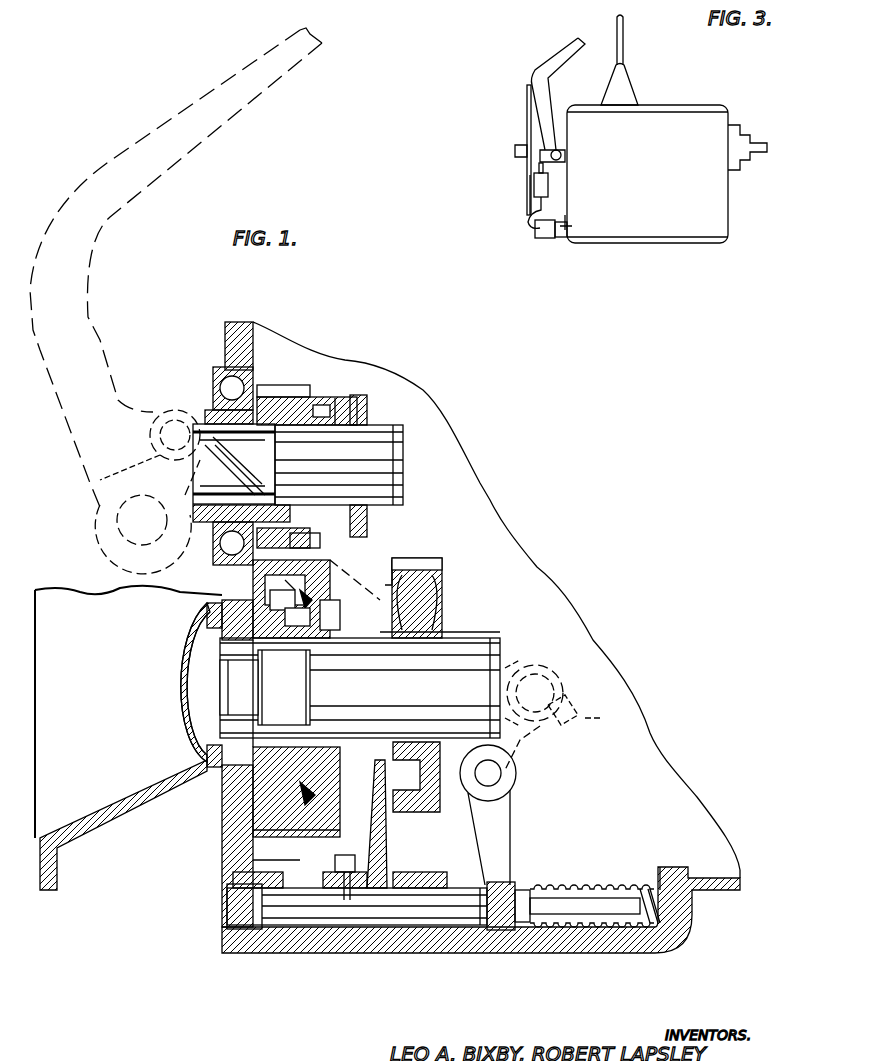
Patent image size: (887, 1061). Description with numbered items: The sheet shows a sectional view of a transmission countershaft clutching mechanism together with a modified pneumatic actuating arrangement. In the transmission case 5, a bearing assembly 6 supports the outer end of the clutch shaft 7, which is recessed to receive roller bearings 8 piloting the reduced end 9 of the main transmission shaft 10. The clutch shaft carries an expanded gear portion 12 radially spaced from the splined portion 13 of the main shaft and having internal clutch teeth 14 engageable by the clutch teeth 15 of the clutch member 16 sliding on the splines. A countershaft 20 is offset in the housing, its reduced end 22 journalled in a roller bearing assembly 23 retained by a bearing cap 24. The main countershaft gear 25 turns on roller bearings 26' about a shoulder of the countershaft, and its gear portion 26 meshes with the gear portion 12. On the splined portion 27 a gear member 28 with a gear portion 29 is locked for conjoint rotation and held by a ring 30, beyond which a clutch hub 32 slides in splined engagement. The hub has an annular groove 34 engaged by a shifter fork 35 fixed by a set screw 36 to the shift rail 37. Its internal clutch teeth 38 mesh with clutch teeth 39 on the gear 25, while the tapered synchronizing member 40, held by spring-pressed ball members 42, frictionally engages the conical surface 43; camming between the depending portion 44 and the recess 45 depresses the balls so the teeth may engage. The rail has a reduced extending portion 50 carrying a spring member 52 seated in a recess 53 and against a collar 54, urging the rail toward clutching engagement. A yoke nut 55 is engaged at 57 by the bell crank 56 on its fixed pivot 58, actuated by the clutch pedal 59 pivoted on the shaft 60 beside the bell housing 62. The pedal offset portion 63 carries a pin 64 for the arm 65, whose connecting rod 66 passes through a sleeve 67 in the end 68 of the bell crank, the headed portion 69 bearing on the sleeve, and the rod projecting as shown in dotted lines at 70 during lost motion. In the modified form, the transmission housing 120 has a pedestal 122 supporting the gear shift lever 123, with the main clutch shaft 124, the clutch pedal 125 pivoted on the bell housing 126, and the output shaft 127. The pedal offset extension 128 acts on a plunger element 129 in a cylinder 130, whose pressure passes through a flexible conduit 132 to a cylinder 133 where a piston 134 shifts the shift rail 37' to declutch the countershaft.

In FIG. 1, the transmission case 5 is at (228, 330).
In FIG. 1, the bearing assembly 6 is at (222, 382).
In FIG. 1, the clutch shaft 7 is at (222, 445).
In FIG. 1, the roller bearings 8 is at (265, 420).
In FIG. 1, the reduced end 9 is at (206, 500).
In FIG. 1, the main transmission shaft 10 is at (400, 455).
In FIG. 1, the gear portion 12 is at (290, 385).
In FIG. 1, the splined portion 13 is at (365, 437).
In FIG. 1, the internal clutch teeth 14 is at (318, 398).
In FIG. 1, the clutch teeth 15 is at (325, 405).
In FIG. 1, the clutch member 16 is at (345, 425).
In FIG. 1, the countershaft 20 is at (228, 795).
In FIG. 1, the reduced end 22 is at (225, 667).
In FIG. 1, the roller bearing assembly 23 is at (207, 630).
In FIG. 1, the bearing cap 24 is at (185, 732).
In FIG. 1, the main countershaft gear 25 is at (240, 815).
In FIG. 1, the gear portion 26 is at (257, 858).
In FIG. 1, the roller bearings 26' is at (177, 707).
In FIG. 1, the splined portion 27 is at (495, 660).
In FIG. 1, the gear member 28 is at (443, 575).
In FIG. 1, the gear portion 29 is at (420, 560).
In FIG. 1, the ring 30 is at (405, 750).
In FIG. 1, the clutch hub 32 is at (335, 635).
In FIG. 1, the annular groove 34 is at (385, 562).
In FIG. 1, the shifter fork 35 is at (384, 862).
In FIG. 1, the set screw 36 is at (346, 858).
In FIG. 1, the shift rail 37 is at (357, 937).
In FIG. 1, the internal clutch teeth 38 is at (337, 617).
In FIG. 1, the clutch teeth 39 is at (291, 621).
In FIG. 1, the synchronizing member 40 is at (262, 585).
In FIG. 1, the spring-pressed ball member 42 is at (226, 597).
In FIG. 1, the conical surface 43 is at (238, 872).
In FIG. 1, the depending portion 44 is at (272, 592).
In FIG. 1, the recess 45 is at (345, 578).
In FIG. 1, the extending portion 50 is at (570, 915).
In FIG. 1, the spring member 52 is at (597, 888).
In FIG. 1, the recess 53 is at (683, 880).
In FIG. 1, the collar 54 is at (521, 925).
In FIG. 1, the yoke nut 55 is at (515, 885).
In FIG. 1, the bell crank 56 is at (518, 775).
In FIG. 1, the engagement point 57 is at (488, 930).
In FIG. 1, the fixed pivot 58 is at (486, 788).
In FIG. 1, the clutch pedal 59 is at (100, 180).
In FIG. 1, the shaft 60 is at (128, 527).
In FIG. 1, the bell housing 62 is at (100, 815).
In FIG. 1, the offset portion 63 is at (152, 408).
In FIG. 1, the pin 64 is at (160, 437).
In FIG. 1, the arm 65 is at (163, 455).
In FIG. 1, the connecting rod 66 is at (467, 632).
In FIG. 1, the sleeve 67 is at (540, 680).
In FIG. 1, the end 68 is at (555, 700).
In FIG. 1, the headed portion 69 is at (572, 705).
In FIG. 1, the projecting rod position 70 is at (600, 718).
In FIG. 3, the shift rail 37' is at (590, 211).
In FIG. 3, the transmission housing 120 is at (653, 243).
In FIG. 3, the pedestal 122 is at (628, 85).
In FIG. 3, the gear shift lever 123 is at (623, 40).
In FIG. 3, the main clutch shaft 124 is at (525, 140).
In FIG. 3, the clutch pedal 125 is at (548, 86).
In FIG. 3, the bell housing 126 is at (533, 188).
In FIG. 3, the output shaft 127 is at (752, 145).
In FIG. 3, the offset extension 128 is at (515, 152).
In FIG. 3, the plunger element 129 is at (538, 168).
In FIG. 3, the cylinder 130 is at (548, 185).
In FIG. 3, the flexible conduit 132 is at (528, 222).
In FIG. 3, the cylinder 133 is at (538, 238).
In FIG. 3, the piston 134 is at (557, 238).